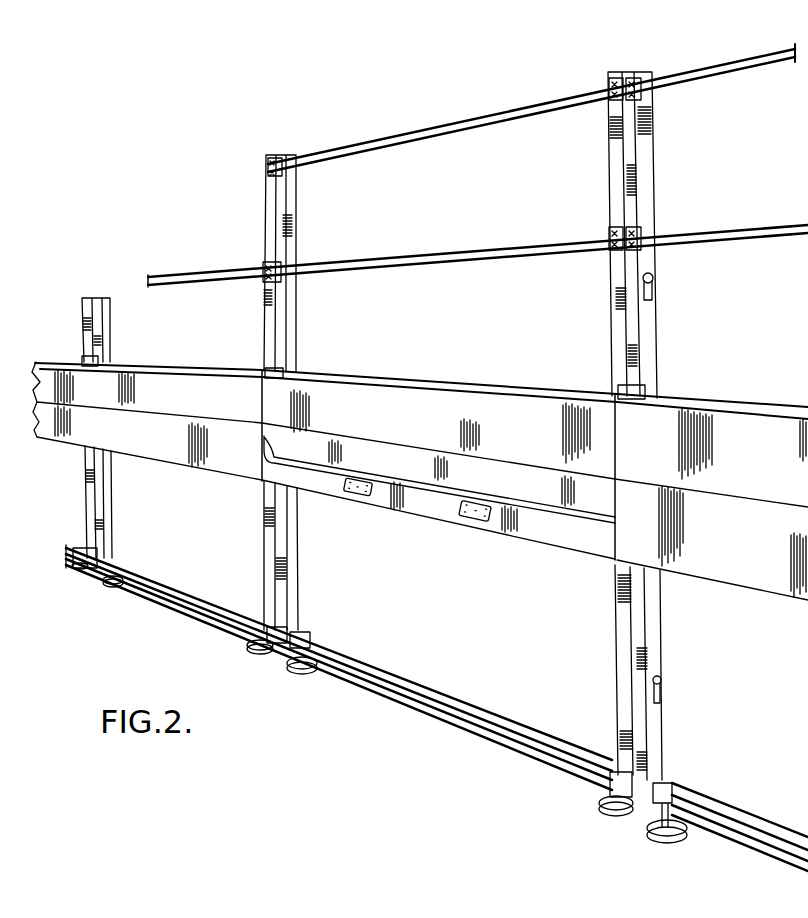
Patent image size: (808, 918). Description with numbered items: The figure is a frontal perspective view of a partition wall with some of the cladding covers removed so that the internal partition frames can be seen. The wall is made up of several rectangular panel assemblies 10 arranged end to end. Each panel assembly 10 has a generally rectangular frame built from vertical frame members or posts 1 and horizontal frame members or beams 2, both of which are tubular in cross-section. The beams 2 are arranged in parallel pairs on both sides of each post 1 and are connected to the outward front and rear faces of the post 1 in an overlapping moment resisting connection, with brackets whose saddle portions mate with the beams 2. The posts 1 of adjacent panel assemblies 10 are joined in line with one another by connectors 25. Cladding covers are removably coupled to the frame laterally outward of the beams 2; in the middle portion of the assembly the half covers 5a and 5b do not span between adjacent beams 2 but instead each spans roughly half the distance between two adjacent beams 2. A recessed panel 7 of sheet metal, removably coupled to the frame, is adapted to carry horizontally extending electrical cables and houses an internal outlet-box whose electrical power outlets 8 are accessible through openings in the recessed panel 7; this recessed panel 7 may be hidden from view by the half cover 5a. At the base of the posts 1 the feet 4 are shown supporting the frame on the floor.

The post 1 is at (297, 195).
The beams 2 is at (415, 141).
The adjustable foot 4 is at (597, 810).
The cover 5a is at (188, 452).
The cover 5b is at (188, 411).
The recessed panel 7 is at (533, 506).
The electrical power outlets 8 is at (475, 521).
The panel assembly 10 is at (420, 454).
The connectors 25 is at (658, 286).